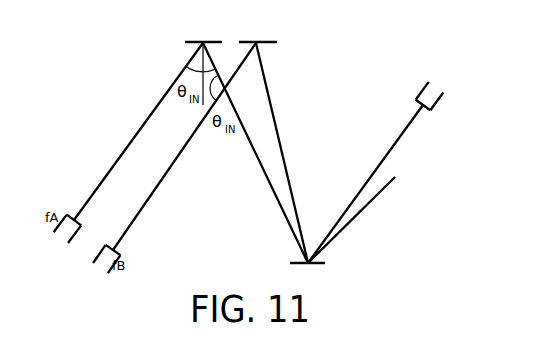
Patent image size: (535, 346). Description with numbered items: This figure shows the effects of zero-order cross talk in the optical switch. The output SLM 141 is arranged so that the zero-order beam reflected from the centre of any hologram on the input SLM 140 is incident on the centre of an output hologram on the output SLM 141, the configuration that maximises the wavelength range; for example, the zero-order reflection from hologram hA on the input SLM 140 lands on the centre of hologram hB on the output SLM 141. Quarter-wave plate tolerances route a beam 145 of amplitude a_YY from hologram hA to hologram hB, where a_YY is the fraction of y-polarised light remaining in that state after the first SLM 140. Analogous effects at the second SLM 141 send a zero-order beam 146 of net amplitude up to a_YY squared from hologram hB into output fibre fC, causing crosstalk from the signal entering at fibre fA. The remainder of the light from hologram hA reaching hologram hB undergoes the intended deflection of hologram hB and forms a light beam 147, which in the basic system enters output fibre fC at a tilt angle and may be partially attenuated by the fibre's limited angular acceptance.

The input SLM 140 is at (288, 42).
The output SLM 141 is at (337, 265).
The beam 145 is at (263, 175).
The zero-order beam 146 is at (395, 142).
The light beam 147 is at (378, 194).